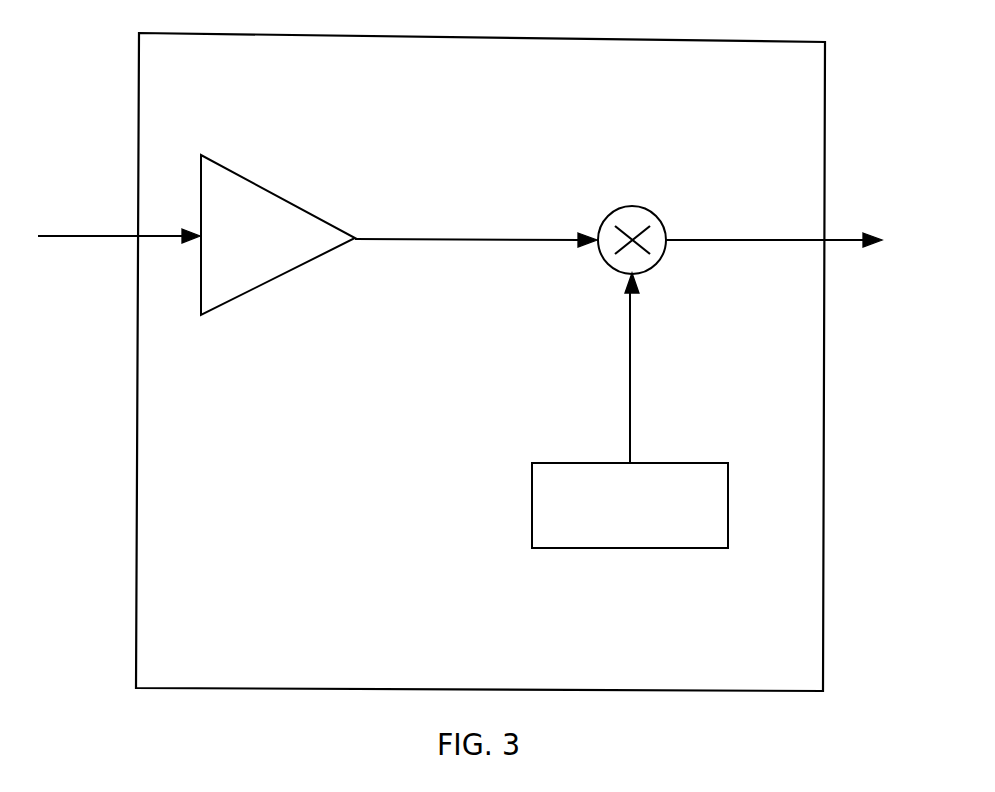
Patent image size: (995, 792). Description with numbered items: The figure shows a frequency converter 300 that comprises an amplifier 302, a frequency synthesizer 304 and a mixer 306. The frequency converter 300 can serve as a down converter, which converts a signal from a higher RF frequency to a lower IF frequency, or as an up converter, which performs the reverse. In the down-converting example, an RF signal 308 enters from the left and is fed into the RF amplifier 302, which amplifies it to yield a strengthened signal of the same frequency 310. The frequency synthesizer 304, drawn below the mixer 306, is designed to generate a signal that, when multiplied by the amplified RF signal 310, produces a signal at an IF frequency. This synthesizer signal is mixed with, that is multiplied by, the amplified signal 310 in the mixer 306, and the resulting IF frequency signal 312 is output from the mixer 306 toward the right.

The frequency converter 300 is at (753, 42).
The amplifier 302 is at (227, 168).
The frequency synthesizer 304 is at (683, 463).
The mixer 306 is at (612, 270).
The RF signal 308 is at (113, 235).
The amplified RF signal 310 is at (447, 238).
The IF frequency signal 312 is at (722, 240).